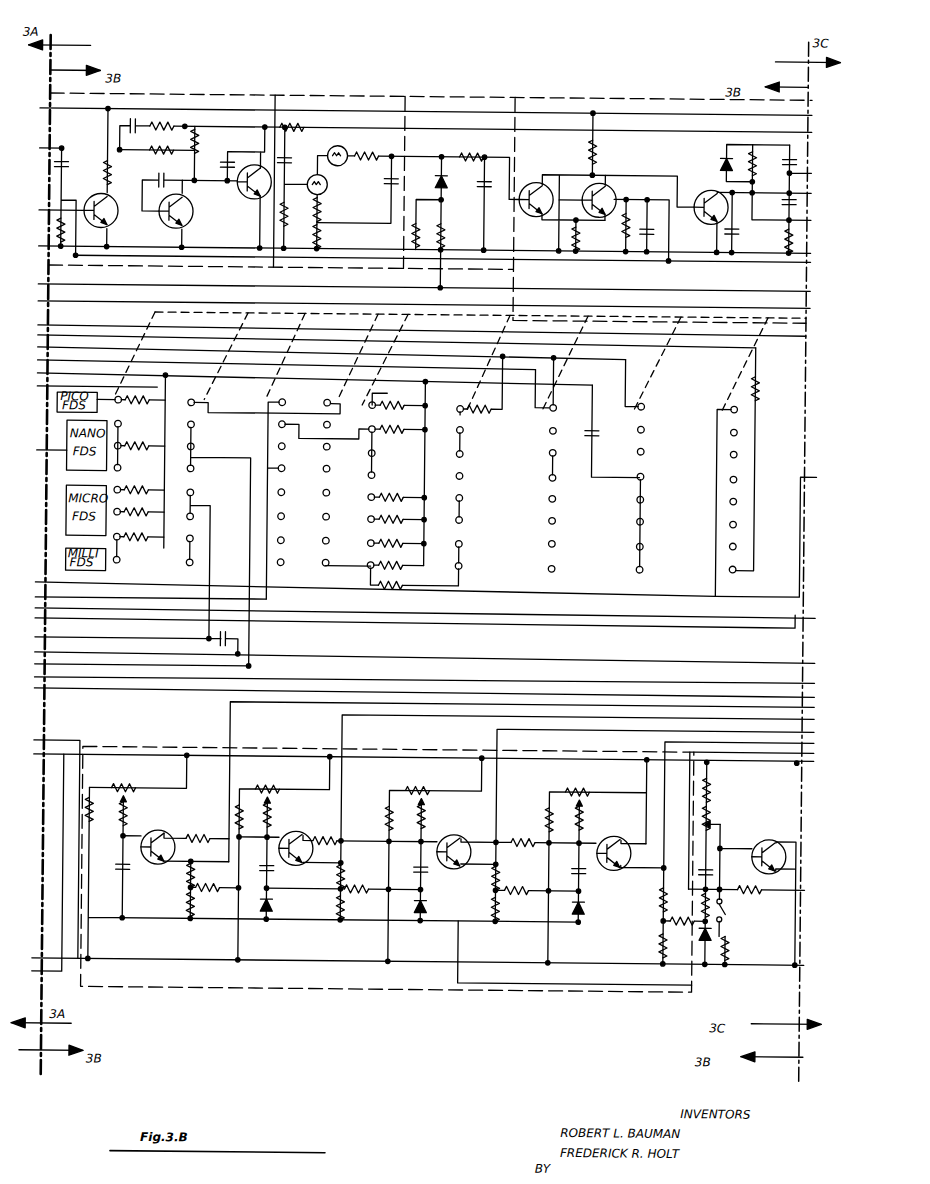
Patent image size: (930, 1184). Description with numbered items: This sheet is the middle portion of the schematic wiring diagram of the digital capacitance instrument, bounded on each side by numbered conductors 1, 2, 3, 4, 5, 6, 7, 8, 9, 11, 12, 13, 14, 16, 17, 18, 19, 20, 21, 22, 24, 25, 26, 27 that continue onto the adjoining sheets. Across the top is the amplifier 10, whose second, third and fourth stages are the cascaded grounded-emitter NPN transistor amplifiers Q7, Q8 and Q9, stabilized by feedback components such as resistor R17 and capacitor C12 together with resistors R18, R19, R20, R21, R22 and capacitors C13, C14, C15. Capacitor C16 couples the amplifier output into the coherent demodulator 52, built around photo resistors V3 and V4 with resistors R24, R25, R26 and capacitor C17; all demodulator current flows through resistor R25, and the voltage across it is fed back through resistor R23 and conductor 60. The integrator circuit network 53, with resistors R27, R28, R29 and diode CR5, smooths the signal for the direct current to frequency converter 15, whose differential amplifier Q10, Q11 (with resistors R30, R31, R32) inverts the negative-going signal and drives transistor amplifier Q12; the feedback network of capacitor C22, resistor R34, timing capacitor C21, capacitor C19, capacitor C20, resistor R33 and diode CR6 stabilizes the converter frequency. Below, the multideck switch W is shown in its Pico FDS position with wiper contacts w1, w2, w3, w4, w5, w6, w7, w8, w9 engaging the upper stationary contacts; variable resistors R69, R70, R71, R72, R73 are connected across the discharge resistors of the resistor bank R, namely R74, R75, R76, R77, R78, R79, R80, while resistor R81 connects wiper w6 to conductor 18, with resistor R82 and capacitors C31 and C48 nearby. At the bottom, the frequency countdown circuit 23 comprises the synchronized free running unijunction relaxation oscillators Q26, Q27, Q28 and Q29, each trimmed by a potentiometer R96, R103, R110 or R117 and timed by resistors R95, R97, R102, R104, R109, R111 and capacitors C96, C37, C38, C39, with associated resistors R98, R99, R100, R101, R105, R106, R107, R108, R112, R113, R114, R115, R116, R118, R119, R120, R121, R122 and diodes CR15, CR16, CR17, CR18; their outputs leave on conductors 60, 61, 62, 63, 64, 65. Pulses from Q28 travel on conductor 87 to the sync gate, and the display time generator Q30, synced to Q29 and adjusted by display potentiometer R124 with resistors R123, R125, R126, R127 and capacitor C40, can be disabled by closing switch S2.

The amplifier 10 is at (216, 93).
The direct current to frequency converter 15 is at (615, 93).
The coherent demodulator 52 is at (350, 93).
The integrator circuit network 53 is at (465, 93).
The frequency countdown circuit 23 is at (350, 1012).
The conductor 87 is at (613, 990).
The conductor 60 is at (234, 716).
The conductor 61 is at (346, 720).
The conductor 62 is at (500, 731).
The conductor 63 is at (668, 741).
The conductor 64 is at (757, 818).
The conductor 65 is at (819, 763).
The conductor 1 is at (39, 866).
The conductor 2 is at (409, 962).
The conductor 3 is at (415, 758).
The conductor 4 is at (47, 846).
The conductor 5 is at (417, 692).
The conductor 6 is at (417, 680).
The conductor 7 is at (133, 665).
The conductor 8 is at (418, 657).
The conductor 9 is at (113, 638).
The conductor 11 is at (421, 613).
The conductor 12 is at (140, 598).
The conductor 13 is at (365, 586).
The conductor 14 is at (42, 450).
The conductor 16 is at (304, 376).
The conductor 17 is at (277, 363).
The conductor 18 is at (322, 350).
The conductor 19 is at (387, 339).
The conductor 20 is at (412, 329).
The conductor 21 is at (414, 305).
The conductor 22 is at (414, 288).
The conductor 24 is at (415, 247).
The conductor 25 is at (51, 211).
The conductor 26 is at (107, 148).
The conductor 27 is at (416, 112).
The multideck switch W is at (225, 442).
The resistor bank R is at (487, 542).
The wiper contact w1 is at (118, 396).
The wiper contact w2 is at (194, 401).
The wiper contact w3 is at (270, 400).
The wiper contact w4 is at (324, 400).
The wiper contact w5 is at (372, 428).
The wiper contact w6 is at (458, 404).
The wiper contact w7 is at (552, 404).
The wiper contact w8 is at (640, 402).
The wiper contact w9 is at (726, 404).
The NPN transistor amplifier Q7 is at (110, 177).
The NPN transistor amplifier Q8 is at (185, 215).
The NPN transistor amplifier Q9 is at (252, 181).
The differential amplifier transistor Q10 is at (607, 206).
The differential amplifier transistor Q11 is at (615, 210).
The transistor amplifier Q12 is at (748, 223).
The free running unijunction relaxation oscillator Q26 is at (176, 859).
The free running unijunction relaxation oscillator Q27 is at (290, 841).
The free running unijunction relaxation oscillator Q28 is at (444, 843).
The free running unijunction relaxation oscillator Q29 is at (625, 845).
The display time generator Q30 is at (758, 863).
The photo resistor V3 is at (309, 174).
The photo resistor V4 is at (340, 148).
The diode CR5 is at (428, 223).
The diode CR6 is at (719, 160).
The diode CR15 is at (274, 914).
The diode CR16 is at (428, 916).
The diode CR17 is at (584, 918).
The diode CR18 is at (690, 942).
The switch S2 is at (734, 909).
The capacitor C12 is at (73, 192).
The capacitor C13 is at (118, 117).
The capacitor C14 is at (188, 186).
The capacitor C15 is at (233, 153).
The capacitor C16 is at (384, 188).
The capacitor C17 is at (358, 190).
The capacitor C19 is at (646, 244).
The capacitor C20 is at (745, 223).
The timing capacitor C21 is at (785, 200).
The timing capacitor C22 is at (784, 209).
The capacitor C31 is at (580, 425).
The capacitor C37 is at (258, 879).
The capacitor C38 is at (412, 881).
The capacitor C39 is at (570, 883).
The capacitor C40 is at (701, 867).
The capacitor C48 is at (243, 641).
The capacitor C96 is at (109, 862).
The resistor R17 is at (74, 233).
The resistor R18 is at (96, 172).
The resistor R19 is at (481, 116).
The resistor R20 is at (164, 144).
The resistor R21 is at (208, 154).
The resistor R22 is at (292, 120).
The resistor R23 is at (296, 214).
The resistor R24 is at (331, 223).
The resistor R25 is at (331, 237).
The resistor R26 is at (437, 165).
The resistor R27 is at (419, 223).
The resistor R28 is at (455, 236).
The resistor R29 is at (469, 146).
The resistor R30 is at (588, 237).
The resistor R31 is at (605, 143).
The resistor R32 is at (630, 202).
The resistor R33 is at (747, 145).
The resistor R34 is at (776, 241).
The variable resistor R69 is at (143, 392).
The variable resistor R70 is at (143, 439).
The variable resistor R71 is at (142, 482).
The variable resistor R72 is at (139, 504).
The variable resistor R73 is at (139, 530).
The discharge resistor R74 is at (401, 396).
The discharge resistor R75 is at (401, 438).
The discharge resistor R76 is at (400, 490).
The discharge resistor R77 is at (400, 514).
The discharge resistor R78 is at (400, 538).
The discharge resistor R79 is at (399, 560).
The discharge resistor R80 is at (414, 579).
The resistor R81 is at (484, 394).
The resistor R82 is at (763, 459).
The resistor R95 is at (101, 809).
The variable potentiometer R96 is at (139, 777).
The resistor R97 is at (135, 861).
The resistor R98 is at (204, 830).
The resistor R99 is at (202, 891).
The resistor R100 is at (169, 904).
The resistor R101 is at (214, 895).
The resistor R102 is at (242, 802).
The variable potentiometer R103 is at (274, 785).
The resistor R104 is at (284, 820).
The resistor R105 is at (348, 830).
The resistor R106 is at (306, 875).
The resistor R107 is at (320, 908).
The resistor R108 is at (380, 881).
The resistor R109 is at (414, 860).
The variable potentiometer R110 is at (417, 786).
The resistor R111 is at (437, 823).
The resistor R112 is at (476, 879).
The resistor R113 is at (476, 910).
The resistor R114 is at (546, 833).
The resistor R115 is at (537, 883).
The resistor R116 is at (552, 802).
The variable potentiometer R117 is at (572, 788).
The resistor R118 is at (588, 798).
The resistor R119 is at (603, 819).
The resistor R120 is at (640, 926).
The resistor R121 is at (639, 945).
The resistor R122 is at (678, 916).
The resistor R123 is at (718, 770).
The display potentiometer R124 is at (714, 814).
The resistor R125 is at (688, 907).
The resistor R126 is at (736, 943).
The resistor R127 is at (746, 884).